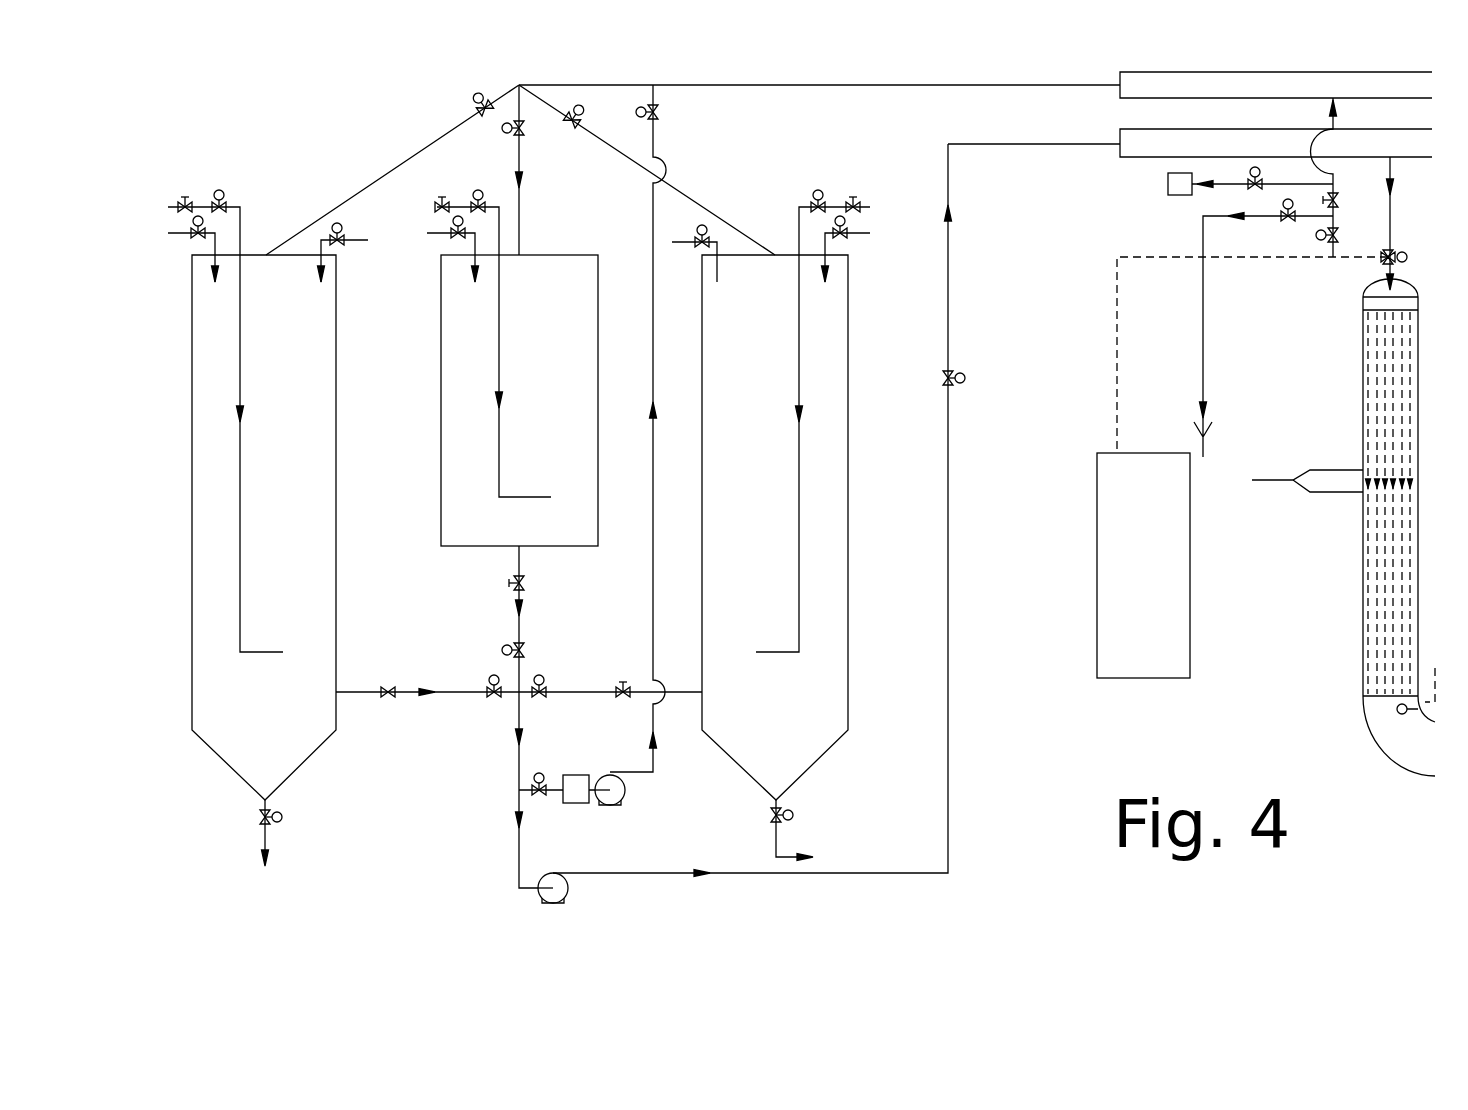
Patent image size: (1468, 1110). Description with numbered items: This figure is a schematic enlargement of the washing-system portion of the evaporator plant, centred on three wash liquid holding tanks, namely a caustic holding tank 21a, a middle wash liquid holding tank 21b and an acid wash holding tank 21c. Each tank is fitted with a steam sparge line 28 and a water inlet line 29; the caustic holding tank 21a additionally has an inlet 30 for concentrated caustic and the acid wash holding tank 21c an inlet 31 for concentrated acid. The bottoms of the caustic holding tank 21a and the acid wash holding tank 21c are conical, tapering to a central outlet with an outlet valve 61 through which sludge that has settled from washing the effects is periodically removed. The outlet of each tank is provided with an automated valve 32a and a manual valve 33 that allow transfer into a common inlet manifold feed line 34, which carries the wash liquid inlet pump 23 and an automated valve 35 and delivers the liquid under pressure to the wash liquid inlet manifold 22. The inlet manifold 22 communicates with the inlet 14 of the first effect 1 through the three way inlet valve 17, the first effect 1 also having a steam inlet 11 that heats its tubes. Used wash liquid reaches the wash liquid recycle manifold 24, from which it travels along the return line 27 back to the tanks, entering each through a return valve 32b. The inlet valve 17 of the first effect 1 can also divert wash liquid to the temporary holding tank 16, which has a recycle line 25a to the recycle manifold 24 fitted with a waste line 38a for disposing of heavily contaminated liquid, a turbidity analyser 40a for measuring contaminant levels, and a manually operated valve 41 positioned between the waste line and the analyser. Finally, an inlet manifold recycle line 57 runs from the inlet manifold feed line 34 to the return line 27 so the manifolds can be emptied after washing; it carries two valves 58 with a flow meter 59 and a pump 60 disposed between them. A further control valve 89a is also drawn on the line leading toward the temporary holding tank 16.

The first effect 1 is at (1363, 576).
The steam inlet 11 is at (1280, 480).
The inlet 14 is at (1390, 280).
The temporary holding tank 16 is at (1160, 578).
The inlet valve 17 is at (1398, 255).
The caustic holding tank 21a is at (312, 467).
The wash liquid holding tank 21b is at (579, 413).
The acid wash holding tank 21c is at (768, 472).
The wash liquid inlet manifold 22 is at (1130, 140).
The wash liquid inlet pump 23 is at (568, 898).
The wash liquid recycle manifold 24 is at (1130, 82).
The recycle line 25a is at (1337, 106).
The return line 27 is at (853, 85).
The steam sparge line 28 is at (242, 226).
The water inlet line 29 is at (170, 240).
The inlet for concentrated caustic 30 is at (350, 240).
The inlet for concentrated acid 31 is at (858, 236).
The automated valve 32a is at (508, 645).
The return valve 32b is at (482, 106).
The manual valve 33 is at (514, 580).
The inlet manifold feed line 34 is at (519, 852).
The automated valve 35 is at (964, 386).
The waste line 38a is at (1203, 318).
The turbidity analyser 40a is at (1168, 184).
The manually operated valve 41 is at (1340, 200).
The inlet manifold recycle line 57 is at (653, 585).
The valve 58 is at (665, 112).
The flow meter 59 is at (565, 775).
The pump 60 is at (622, 802).
The outlet valve 61 is at (280, 815).
The control valve 89a is at (1288, 225).